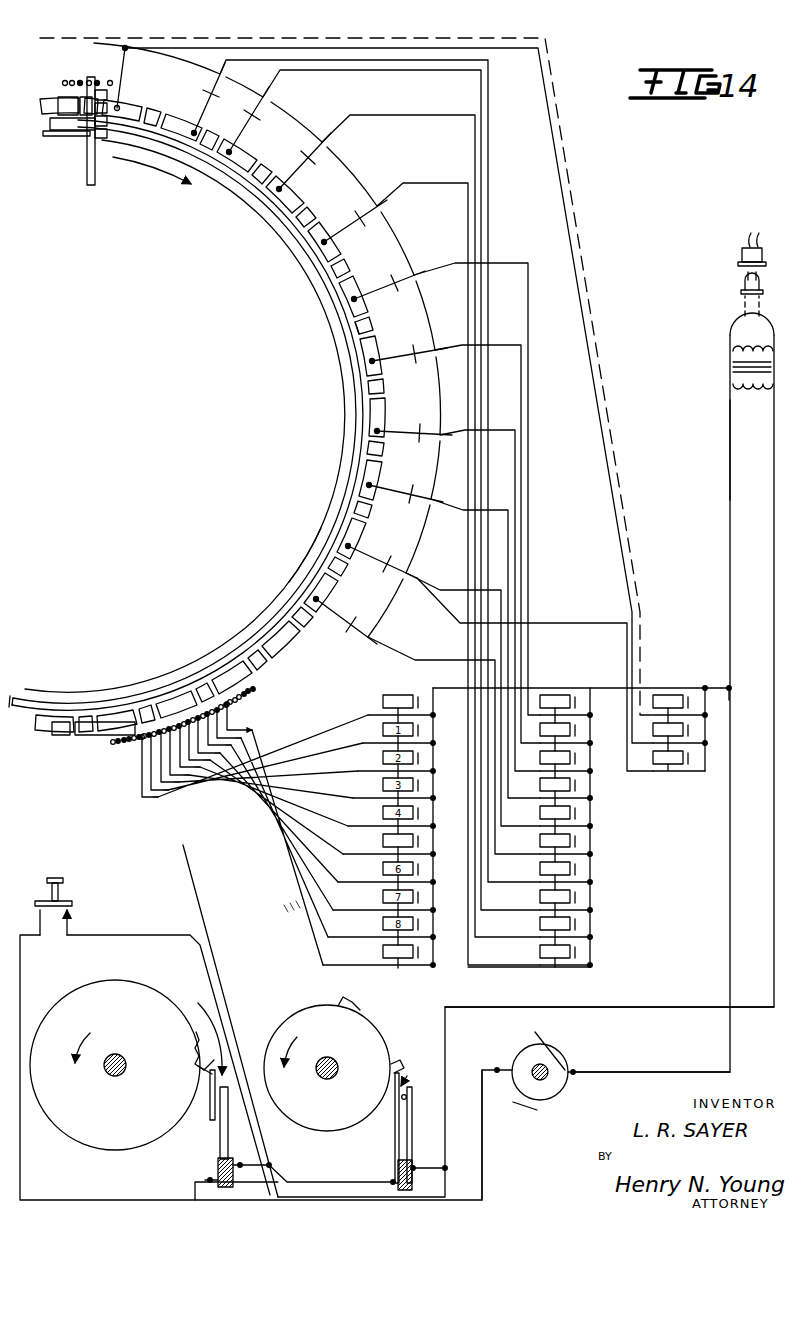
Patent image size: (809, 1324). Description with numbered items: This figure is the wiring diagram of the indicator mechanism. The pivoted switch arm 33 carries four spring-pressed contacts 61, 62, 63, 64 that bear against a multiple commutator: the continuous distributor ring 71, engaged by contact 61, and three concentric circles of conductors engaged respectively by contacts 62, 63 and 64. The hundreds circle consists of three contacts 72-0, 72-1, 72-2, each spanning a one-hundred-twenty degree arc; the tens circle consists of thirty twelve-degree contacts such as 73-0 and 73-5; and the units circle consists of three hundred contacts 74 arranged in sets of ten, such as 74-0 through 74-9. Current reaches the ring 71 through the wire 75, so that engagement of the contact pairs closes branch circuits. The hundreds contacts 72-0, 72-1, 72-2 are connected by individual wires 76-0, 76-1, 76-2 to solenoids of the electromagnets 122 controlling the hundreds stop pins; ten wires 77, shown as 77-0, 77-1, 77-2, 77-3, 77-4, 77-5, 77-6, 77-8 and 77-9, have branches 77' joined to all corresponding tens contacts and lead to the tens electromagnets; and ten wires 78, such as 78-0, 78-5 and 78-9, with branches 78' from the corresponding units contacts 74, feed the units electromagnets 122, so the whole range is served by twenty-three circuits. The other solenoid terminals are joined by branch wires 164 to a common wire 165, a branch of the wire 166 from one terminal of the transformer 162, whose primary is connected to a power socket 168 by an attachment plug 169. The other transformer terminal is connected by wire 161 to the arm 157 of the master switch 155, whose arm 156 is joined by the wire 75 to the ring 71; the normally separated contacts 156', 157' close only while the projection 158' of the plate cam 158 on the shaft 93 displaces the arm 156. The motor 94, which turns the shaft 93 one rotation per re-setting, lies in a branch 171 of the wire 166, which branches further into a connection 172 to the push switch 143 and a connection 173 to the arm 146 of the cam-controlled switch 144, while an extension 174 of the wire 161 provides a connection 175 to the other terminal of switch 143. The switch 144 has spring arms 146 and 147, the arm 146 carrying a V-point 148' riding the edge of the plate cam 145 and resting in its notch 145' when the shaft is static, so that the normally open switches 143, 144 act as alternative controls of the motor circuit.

The intermediately pivoted arm 33 is at (90, 185).
The innermost arm contact 61 is at (87, 140).
The spring contact 62 is at (72, 130).
The spring contact 63 is at (73, 88).
The spring contact 64 is at (98, 85).
The distributor ring 71 is at (185, 668).
The hundreds contact 72-0 is at (64, 720).
The hundreds contact 72-1 is at (292, 240).
The hundreds contact 72-2 is at (293, 595).
The tens contact 73-0 is at (366, 312).
The tens contact 73-5 is at (135, 108).
The units contacts 74 is at (112, 748).
The units contact 74-0 is at (141, 750).
The units contact 74-9 is at (262, 697).
The wire 75 is at (195, 872).
The wire 76-0 is at (582, 203).
The wire 76-1 is at (598, 450).
The wire 76-2 is at (570, 623).
The wires 77 is at (383, 490).
The branches 77' is at (284, 356).
The wire 77-0 is at (432, 274).
The wire 77-1 is at (406, 357).
The wire 77-2 is at (404, 434).
The wire 77-3 is at (395, 500).
The wire 77-4 is at (434, 578).
The wire 77-5 is at (412, 660).
The wire 77-6 is at (490, 102).
The wire 77-8 is at (420, 115).
The wire 77-9 is at (420, 188).
The wires 78 is at (263, 840).
The branches 78' is at (180, 758).
The wire 78-0 is at (370, 714).
The wire 78-5 is at (378, 842).
The wire 78-9 is at (378, 953).
The shaft 93 is at (112, 1076).
The motor 94 is at (522, 1062).
The electromagnets 122 is at (395, 958).
The push switch 143 is at (70, 898).
The switch 144 is at (196, 1026).
The plate cam 145 is at (115, 1065).
The notch 145' is at (175, 1050).
The forward conductor spring arm 146 is at (218, 1140).
The rear conductor spring arm 147 is at (218, 1160).
The V-point 148' is at (185, 1075).
The master-switch 155 is at (421, 1070).
The switch arm 156 is at (334, 1128).
The contact 156' is at (428, 1135).
The switch arm 157 is at (397, 1170).
The contact 157' is at (425, 1087).
The plate cam 158 is at (327, 1068).
The cam projection 158' is at (373, 1006).
The conductor wire 161 is at (773, 570).
The transformer 162 is at (728, 367).
The branch wires 164 is at (438, 710).
The common circuit wire 165 is at (703, 682).
The wire 166 is at (728, 504).
The power socket 168 is at (740, 250).
The attachment plug 169 is at (738, 296).
The branch 171 is at (484, 1158).
The connection 172 is at (21, 975).
The connection 173 is at (205, 1181).
The extension of wire 161 174 is at (268, 1178).
The connection 175 is at (135, 936).